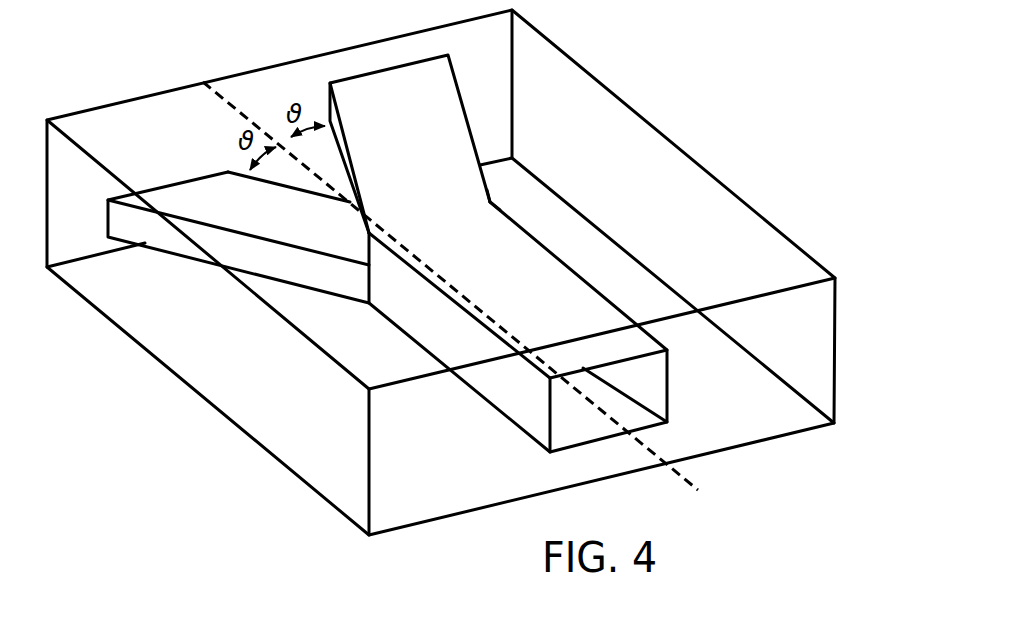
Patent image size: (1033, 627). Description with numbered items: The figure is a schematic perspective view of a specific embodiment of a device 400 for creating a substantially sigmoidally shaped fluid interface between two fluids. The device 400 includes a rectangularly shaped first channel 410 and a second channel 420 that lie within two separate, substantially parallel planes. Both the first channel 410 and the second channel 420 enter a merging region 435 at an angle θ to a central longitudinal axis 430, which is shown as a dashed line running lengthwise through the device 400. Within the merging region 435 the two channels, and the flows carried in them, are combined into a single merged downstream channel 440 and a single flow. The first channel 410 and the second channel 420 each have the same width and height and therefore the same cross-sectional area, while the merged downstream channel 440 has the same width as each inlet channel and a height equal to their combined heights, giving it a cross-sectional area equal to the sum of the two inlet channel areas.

The device 400 is at (703, 55).
The first channel 410 is at (175, 255).
The second channel 420 is at (465, 115).
The central longitudinal axis 430 is at (203, 82).
The merging region 435 is at (490, 202).
The merged downstream channel 440 is at (667, 388).